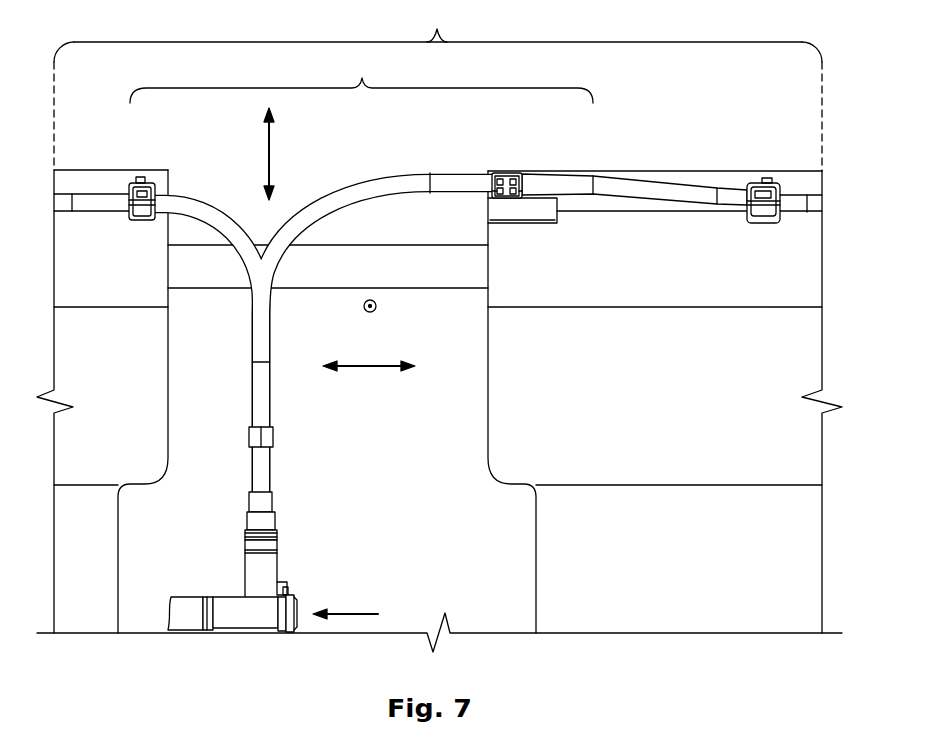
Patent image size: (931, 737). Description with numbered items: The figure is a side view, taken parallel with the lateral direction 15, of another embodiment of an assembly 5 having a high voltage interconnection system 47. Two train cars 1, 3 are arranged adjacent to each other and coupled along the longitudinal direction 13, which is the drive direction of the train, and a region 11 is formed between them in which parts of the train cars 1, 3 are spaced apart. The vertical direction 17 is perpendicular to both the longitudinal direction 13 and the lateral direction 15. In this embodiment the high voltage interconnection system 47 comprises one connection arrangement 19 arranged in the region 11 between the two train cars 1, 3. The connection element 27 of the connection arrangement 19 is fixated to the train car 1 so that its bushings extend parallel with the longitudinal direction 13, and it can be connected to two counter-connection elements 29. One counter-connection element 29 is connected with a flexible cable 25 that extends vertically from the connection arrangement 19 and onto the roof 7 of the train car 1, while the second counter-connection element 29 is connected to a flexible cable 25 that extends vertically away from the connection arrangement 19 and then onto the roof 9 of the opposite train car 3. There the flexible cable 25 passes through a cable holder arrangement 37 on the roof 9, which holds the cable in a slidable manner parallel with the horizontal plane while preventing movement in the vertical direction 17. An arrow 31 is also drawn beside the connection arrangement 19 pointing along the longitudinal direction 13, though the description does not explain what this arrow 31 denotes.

The assembly 5 is at (437, 21).
The high voltage interconnection system 47 is at (361, 76).
The train car 1 is at (135, 148).
The train car 3 is at (688, 145).
The roof 7 is at (112, 170).
The roof 9 is at (745, 170).
The flexible cable 25 is at (184, 197).
The vertical direction 17 is at (275, 160).
The cable holder arrangement 37 is at (512, 152).
The lateral direction 15 is at (376, 308).
The longitudinal direction 13 is at (373, 368).
The region 11 is at (388, 470).
The connection arrangement 19 is at (206, 550).
The counter-connection element 29 is at (272, 562).
The flow direction 31 is at (355, 613).
The connection element 27 is at (188, 622).